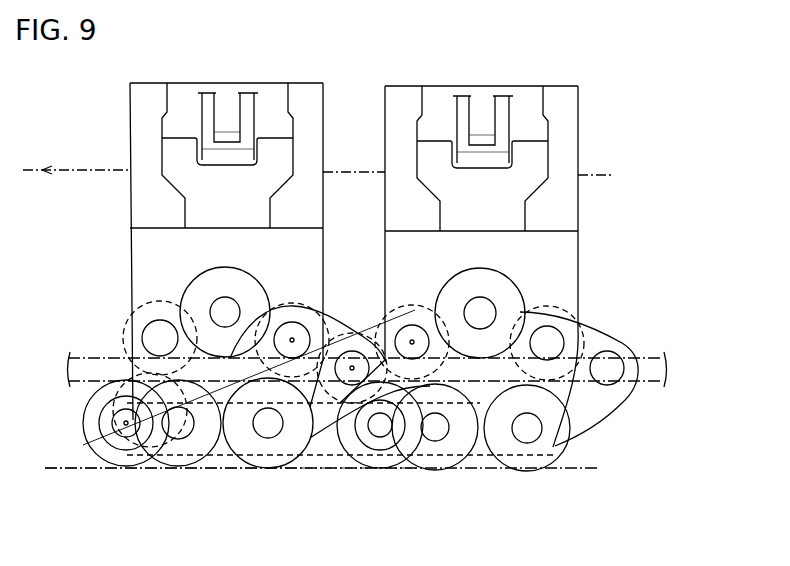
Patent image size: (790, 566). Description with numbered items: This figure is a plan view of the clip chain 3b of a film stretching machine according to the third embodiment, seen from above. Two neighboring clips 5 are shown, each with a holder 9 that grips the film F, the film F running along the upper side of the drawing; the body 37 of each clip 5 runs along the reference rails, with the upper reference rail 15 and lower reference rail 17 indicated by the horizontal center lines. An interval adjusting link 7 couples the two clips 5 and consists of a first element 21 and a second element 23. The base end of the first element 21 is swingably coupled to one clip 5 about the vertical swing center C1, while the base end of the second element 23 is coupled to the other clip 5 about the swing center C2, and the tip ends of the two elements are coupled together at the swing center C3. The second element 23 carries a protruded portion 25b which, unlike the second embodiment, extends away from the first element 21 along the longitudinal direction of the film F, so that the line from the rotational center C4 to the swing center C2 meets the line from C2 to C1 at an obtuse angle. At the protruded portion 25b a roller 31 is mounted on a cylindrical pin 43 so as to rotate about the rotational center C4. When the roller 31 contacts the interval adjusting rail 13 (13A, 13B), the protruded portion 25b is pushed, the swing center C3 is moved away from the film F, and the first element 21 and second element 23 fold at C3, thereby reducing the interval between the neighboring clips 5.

The conveying unit 3b is at (365, 73).
The holder 9 is at (163, 128).
The clip 5 is at (128, 153).
The film F is at (53, 178).
The frame 37 is at (128, 250).
The interval adjusting link 7 is at (350, 258).
The first element 21 is at (373, 325).
The swing center C2 is at (292, 338).
The swing center C3 is at (352, 366).
The swing center C1 is at (412, 340).
The cylindrical pin 43 is at (118, 392).
The upper reference rail 15 is at (603, 373).
The lower reference rail 17 is at (648, 358).
The roller 31 is at (102, 466).
The rotational center C4 is at (126, 423).
The protruded portion 25b is at (138, 470).
The second element 23 is at (200, 470).
The interval adjusting rail 13 is at (165, 506).
The interval adjusting rail 13A is at (165, 506).
The interval adjusting rail 13B is at (68, 470).